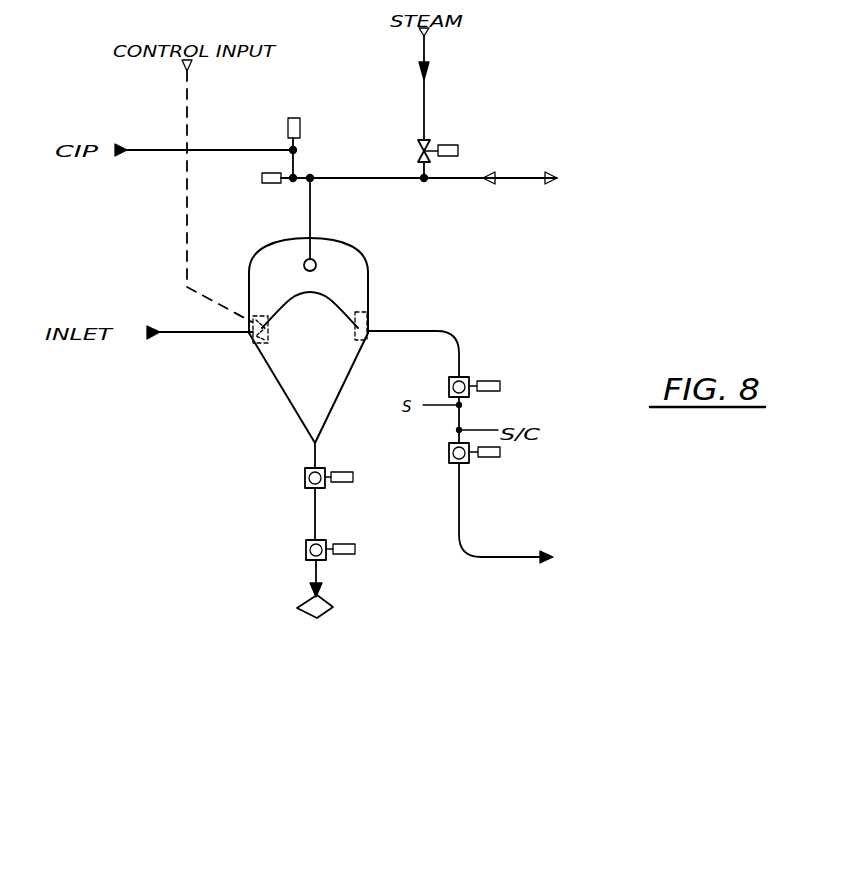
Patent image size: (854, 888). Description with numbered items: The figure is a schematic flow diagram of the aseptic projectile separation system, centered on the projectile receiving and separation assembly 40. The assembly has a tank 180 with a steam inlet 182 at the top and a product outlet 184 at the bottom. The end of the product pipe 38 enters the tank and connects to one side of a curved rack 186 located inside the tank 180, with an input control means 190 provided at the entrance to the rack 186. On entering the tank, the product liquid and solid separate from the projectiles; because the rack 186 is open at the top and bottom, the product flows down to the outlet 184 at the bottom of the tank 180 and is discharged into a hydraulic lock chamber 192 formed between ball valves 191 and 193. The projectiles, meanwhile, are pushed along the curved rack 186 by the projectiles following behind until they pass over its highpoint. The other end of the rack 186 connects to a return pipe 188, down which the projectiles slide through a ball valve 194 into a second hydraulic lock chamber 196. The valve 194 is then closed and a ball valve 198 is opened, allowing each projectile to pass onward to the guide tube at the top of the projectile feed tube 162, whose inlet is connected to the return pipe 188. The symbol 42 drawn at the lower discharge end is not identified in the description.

The product pipe 38 is at (192, 330).
The projectile receiving and separation assembly 40 is at (280, 424).
The discharge destination 42 is at (298, 612).
The projectile feed tube 162 is at (462, 520).
The tank 180 is at (360, 248).
The steam inlet 182 is at (310, 212).
The product outlet 184 is at (317, 448).
The curved rack 186 is at (333, 302).
The return pipe 188 is at (435, 327).
The input control means 190 is at (262, 316).
The ball valve 191 is at (305, 482).
The hydraulic lock chamber 192 is at (296, 500).
The ball valve 193 is at (306, 552).
The ball valve 194 is at (450, 382).
The hydraulic lock chamber 196 is at (460, 417).
The ball valve 198 is at (468, 465).